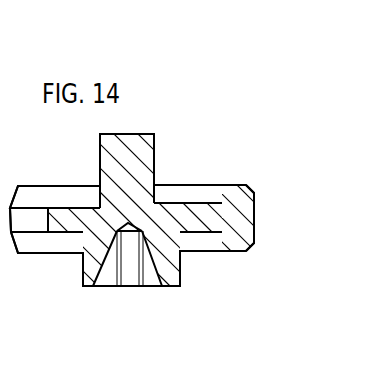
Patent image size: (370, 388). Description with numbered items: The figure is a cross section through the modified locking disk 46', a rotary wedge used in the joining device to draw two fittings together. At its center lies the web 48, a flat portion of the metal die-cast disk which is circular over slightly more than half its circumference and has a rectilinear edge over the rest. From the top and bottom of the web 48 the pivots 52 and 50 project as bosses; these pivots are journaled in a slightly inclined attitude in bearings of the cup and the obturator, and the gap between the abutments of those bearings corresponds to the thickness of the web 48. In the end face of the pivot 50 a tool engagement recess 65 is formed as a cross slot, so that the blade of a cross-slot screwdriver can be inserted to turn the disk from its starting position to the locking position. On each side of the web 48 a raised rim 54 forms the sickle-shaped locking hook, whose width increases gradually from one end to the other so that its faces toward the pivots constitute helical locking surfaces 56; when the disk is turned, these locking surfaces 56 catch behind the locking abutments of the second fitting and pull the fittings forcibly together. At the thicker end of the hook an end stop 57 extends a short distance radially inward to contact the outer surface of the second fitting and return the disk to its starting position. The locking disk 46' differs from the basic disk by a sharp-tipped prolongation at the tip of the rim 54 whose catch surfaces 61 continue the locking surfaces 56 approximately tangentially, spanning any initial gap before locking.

The locking disk 46' is at (132, 257).
The web 48 is at (188, 215).
The pivot 50 is at (188, 255).
The pivot 52 is at (128, 153).
The rim 54 is at (241, 200).
The locking surfaces 56 is at (222, 203).
The end stop 57 is at (48, 247).
The catch surfaces 61 is at (48, 192).
The tool engagement recess 65 is at (152, 268).